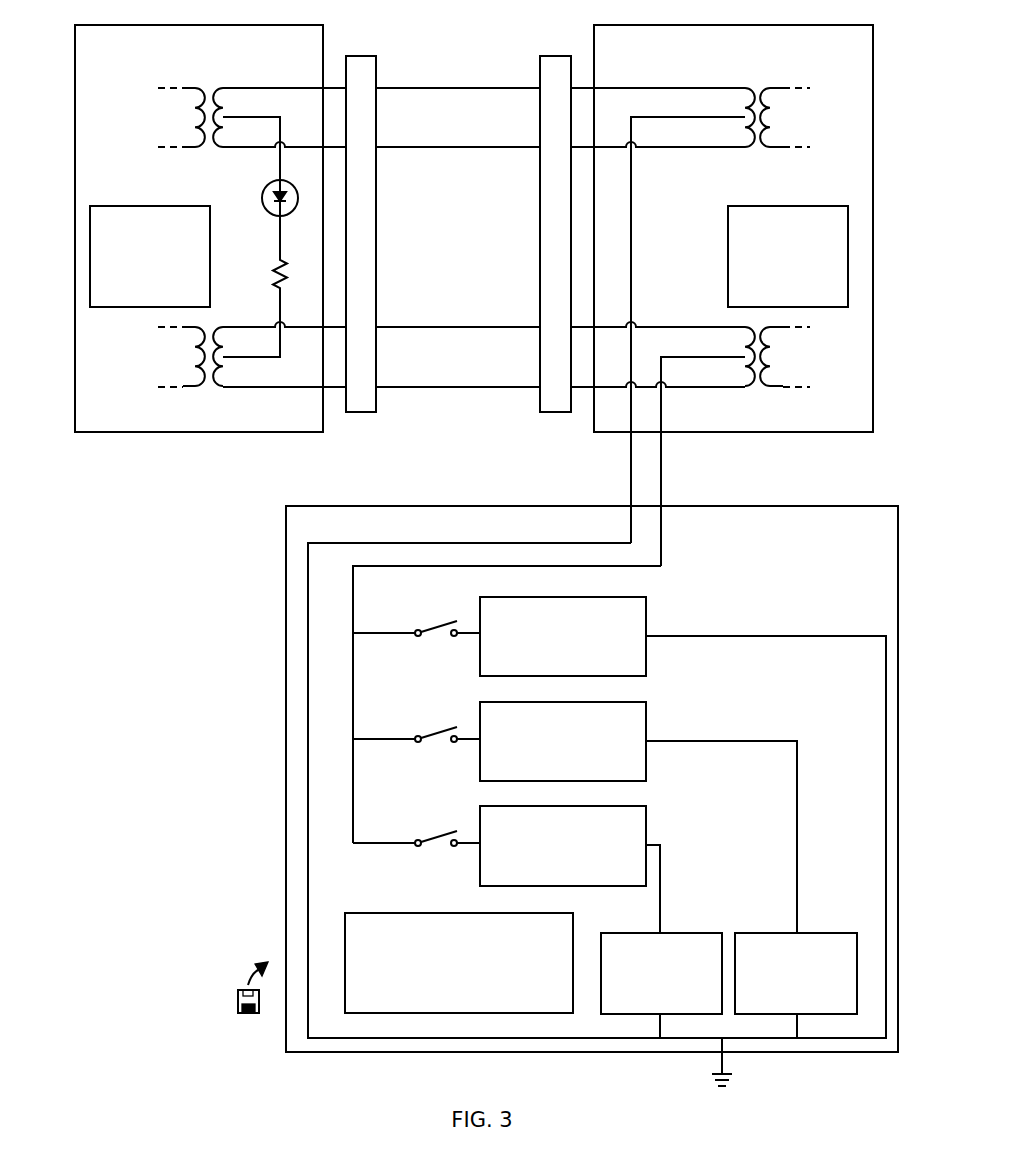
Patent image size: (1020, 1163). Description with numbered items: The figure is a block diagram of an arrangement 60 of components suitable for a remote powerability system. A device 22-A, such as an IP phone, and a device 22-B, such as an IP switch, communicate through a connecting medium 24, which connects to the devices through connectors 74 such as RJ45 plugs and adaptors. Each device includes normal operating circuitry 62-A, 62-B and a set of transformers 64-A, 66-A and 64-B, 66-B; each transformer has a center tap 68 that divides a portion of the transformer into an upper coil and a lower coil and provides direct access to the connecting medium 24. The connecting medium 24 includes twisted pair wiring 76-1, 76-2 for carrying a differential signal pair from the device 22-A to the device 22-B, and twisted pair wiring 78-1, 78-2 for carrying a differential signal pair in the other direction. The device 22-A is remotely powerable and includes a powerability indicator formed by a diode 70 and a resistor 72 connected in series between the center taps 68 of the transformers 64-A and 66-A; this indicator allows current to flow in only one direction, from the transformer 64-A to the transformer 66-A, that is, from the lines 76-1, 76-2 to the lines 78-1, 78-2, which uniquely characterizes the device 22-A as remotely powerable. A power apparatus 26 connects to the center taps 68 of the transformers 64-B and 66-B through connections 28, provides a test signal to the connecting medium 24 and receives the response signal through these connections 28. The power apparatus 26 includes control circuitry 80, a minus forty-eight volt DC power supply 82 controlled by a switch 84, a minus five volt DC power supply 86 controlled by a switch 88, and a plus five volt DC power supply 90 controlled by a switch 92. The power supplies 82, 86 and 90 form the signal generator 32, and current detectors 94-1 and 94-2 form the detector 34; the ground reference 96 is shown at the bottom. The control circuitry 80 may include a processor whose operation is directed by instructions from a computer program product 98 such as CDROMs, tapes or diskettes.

The device 22-A is at (258, 60).
The device 22-B is at (778, 60).
The connecting medium 24 is at (478, 58).
The power apparatus 26 is at (845, 585).
The connections 28 is at (688, 462).
The signal generator 32 is at (677, 609).
The detector 34 is at (745, 869).
The arrangement 60 is at (105, 1017).
The normal operating circuitry 62-A is at (134, 296).
The normal operating circuitry 62-B is at (772, 296).
The transformer 64-A is at (188, 183).
The transformer 64-B is at (743, 183).
The transformer 66-A is at (188, 422).
The transformer 66-B is at (736, 422).
The center tap 68 is at (220, 118).
The diode 70 is at (262, 198).
The resistor 72 is at (274, 270).
The connectors 74 is at (377, 244).
The twisted pair wiring 76-1 is at (445, 89).
The twisted pair wiring 76-2 is at (445, 149).
The twisted pair wiring 78-1 is at (452, 329).
The twisted pair wiring 78-2 is at (452, 389).
The control circuitry 80 is at (450, 986).
The -48 volt DC power supply 82 is at (603, 665).
The switch 84 is at (427, 663).
The -5 VDC power supply 86 is at (603, 770).
The switch 88 is at (427, 769).
The +5 VDC power supply 90 is at (603, 874).
The switch 92 is at (427, 873).
The current detector 94-1 is at (645, 1004).
The current detector 94-2 is at (780, 1004).
The ground 96 is at (716, 1077).
The computer program product 98 is at (238, 1000).